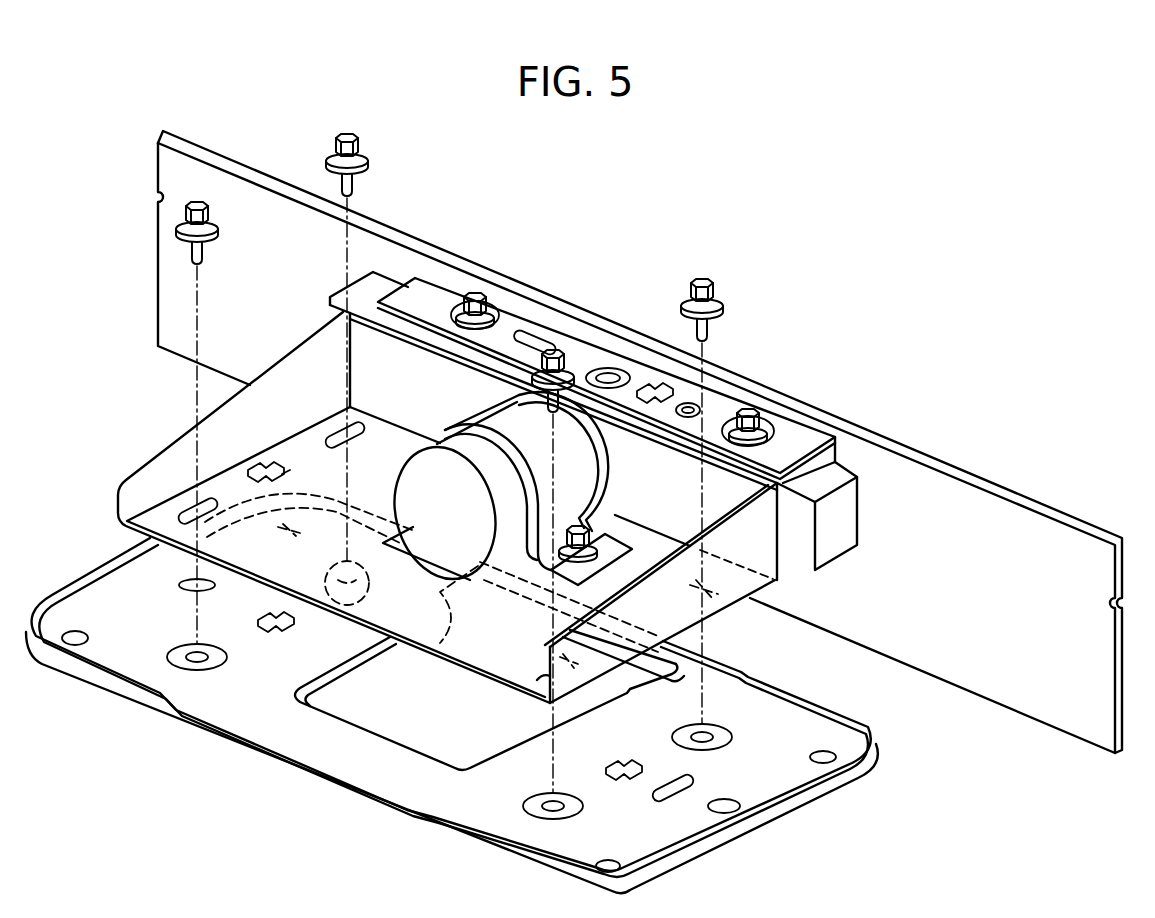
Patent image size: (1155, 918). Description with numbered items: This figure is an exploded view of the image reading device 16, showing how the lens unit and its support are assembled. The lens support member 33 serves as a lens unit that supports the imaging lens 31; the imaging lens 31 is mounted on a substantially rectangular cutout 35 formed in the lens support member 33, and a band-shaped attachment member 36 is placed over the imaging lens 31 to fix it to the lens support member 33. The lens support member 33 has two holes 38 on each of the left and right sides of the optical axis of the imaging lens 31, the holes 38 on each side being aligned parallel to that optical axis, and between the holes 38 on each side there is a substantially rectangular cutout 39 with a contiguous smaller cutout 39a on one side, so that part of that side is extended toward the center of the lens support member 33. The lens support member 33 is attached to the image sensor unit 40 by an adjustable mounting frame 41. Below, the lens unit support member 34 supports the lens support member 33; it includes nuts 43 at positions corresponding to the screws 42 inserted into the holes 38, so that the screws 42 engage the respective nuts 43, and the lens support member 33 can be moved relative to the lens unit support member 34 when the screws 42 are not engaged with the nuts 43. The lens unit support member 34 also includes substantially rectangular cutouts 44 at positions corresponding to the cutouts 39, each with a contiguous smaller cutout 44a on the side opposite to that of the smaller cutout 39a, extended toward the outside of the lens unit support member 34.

The image reading device 16 is at (866, 214).
The imaging lens 31 is at (447, 440).
The lens support member 33 is at (474, 507).
The lens unit support member 34 is at (452, 715).
The cutout 35 is at (405, 541).
The attachment member 36 is at (495, 422).
The holes 38 is at (343, 430).
The cutout 39 is at (265, 466).
The smaller cutout 39a is at (288, 476).
The image sensor unit 40 is at (803, 381).
The adjustable mounting frame 41 is at (443, 287).
The screws 42 is at (342, 136).
The nuts 43 is at (200, 668).
The cutouts 44 is at (288, 630).
The smaller cutout 44a is at (268, 620).